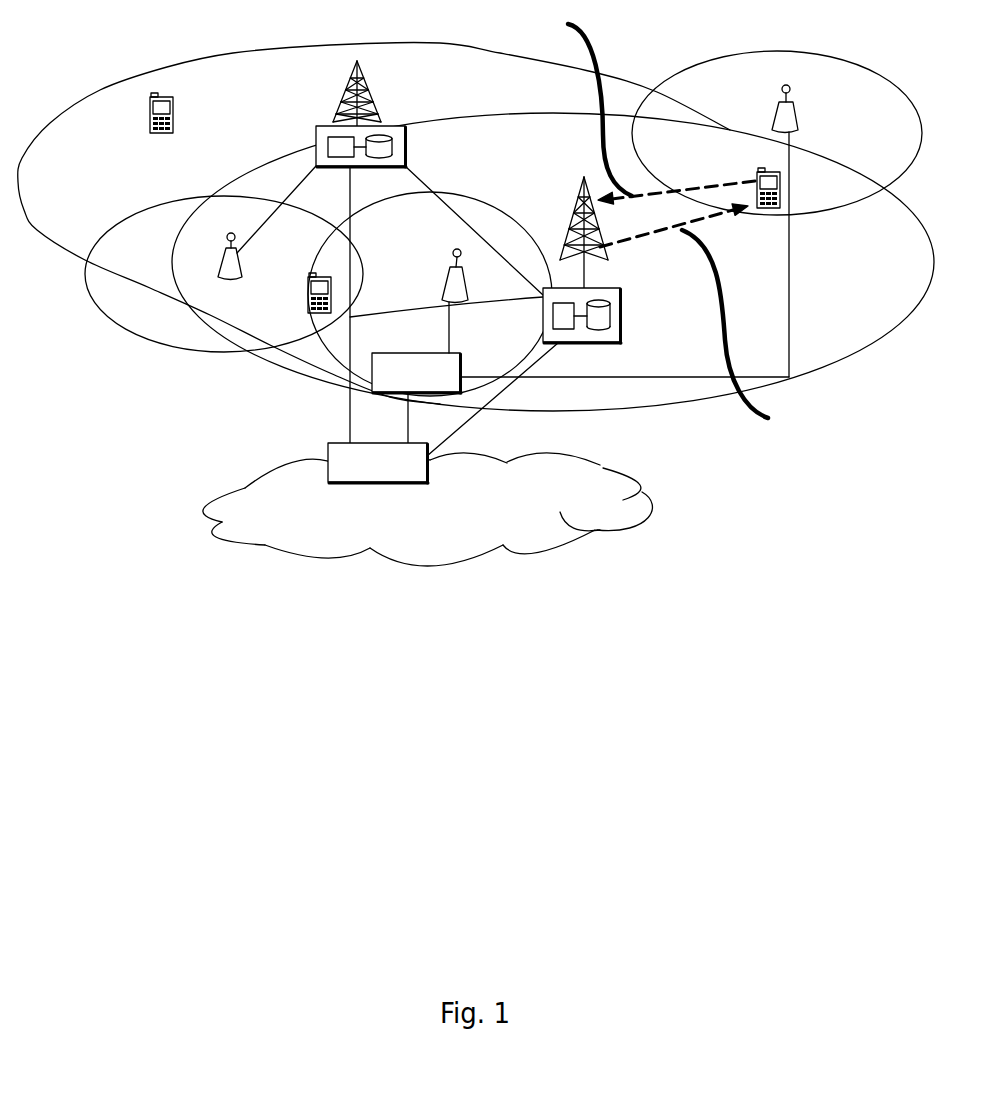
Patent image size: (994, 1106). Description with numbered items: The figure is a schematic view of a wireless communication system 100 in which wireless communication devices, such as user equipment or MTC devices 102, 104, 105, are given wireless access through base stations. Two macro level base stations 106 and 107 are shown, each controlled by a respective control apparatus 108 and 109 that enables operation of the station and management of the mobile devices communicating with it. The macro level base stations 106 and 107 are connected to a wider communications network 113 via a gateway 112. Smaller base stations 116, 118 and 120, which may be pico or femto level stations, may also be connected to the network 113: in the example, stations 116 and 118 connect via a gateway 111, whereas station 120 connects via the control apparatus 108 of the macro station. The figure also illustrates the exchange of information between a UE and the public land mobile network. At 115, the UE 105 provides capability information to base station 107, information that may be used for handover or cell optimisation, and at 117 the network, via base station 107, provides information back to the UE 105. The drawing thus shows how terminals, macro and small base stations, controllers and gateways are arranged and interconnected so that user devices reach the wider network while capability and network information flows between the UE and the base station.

The wireless communication system 100 is at (86, 82).
The user equipment 102 is at (152, 123).
The user equipment 104 is at (310, 297).
The user equipment 105 is at (768, 210).
The macro level base station 106 is at (340, 100).
The macro level base station 107 is at (598, 235).
The control apparatus 108 is at (316, 140).
The control apparatus 109 is at (613, 335).
The gateway 111 is at (372, 378).
The gateway 112 is at (328, 443).
The communications network 113 is at (268, 488).
The UE capability information 115 is at (642, 109).
The smaller base station 116 is at (772, 108).
The information provided to the UE 117 is at (699, 318).
The smaller base station 118 is at (458, 288).
The smaller base station 120 is at (220, 260).